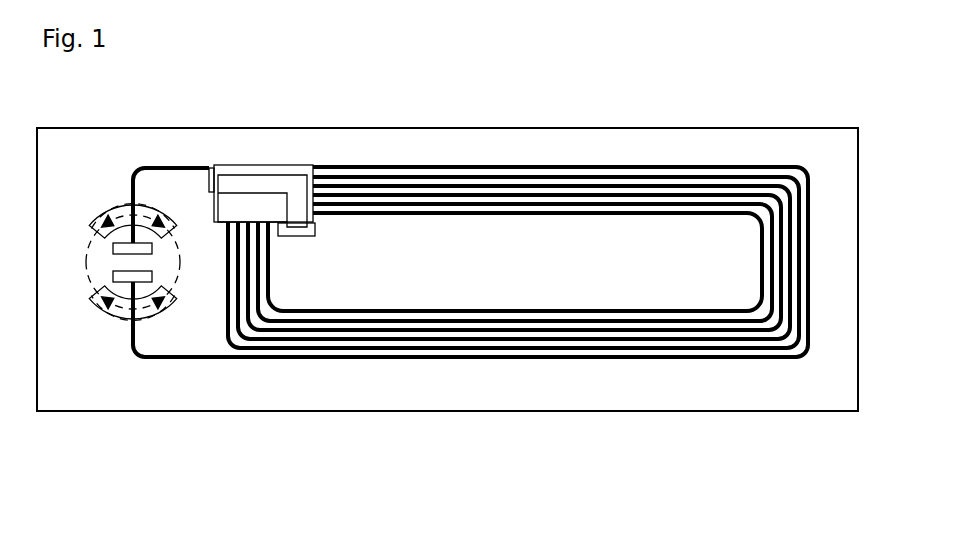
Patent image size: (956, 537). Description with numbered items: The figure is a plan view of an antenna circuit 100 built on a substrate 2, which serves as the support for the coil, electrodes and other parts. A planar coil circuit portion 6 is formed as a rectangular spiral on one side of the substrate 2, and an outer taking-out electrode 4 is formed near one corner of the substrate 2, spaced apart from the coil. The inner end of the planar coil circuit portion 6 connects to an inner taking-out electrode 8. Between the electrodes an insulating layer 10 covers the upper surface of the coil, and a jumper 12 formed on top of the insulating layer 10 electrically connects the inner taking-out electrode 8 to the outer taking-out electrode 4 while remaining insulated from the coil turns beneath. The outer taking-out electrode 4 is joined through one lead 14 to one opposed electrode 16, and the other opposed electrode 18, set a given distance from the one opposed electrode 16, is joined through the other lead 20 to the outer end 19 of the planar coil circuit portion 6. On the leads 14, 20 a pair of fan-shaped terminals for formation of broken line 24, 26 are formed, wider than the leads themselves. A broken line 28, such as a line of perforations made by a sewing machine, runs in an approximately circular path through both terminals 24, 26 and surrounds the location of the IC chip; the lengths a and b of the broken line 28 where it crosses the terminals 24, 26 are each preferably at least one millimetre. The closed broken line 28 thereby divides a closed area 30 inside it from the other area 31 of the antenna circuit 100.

The antenna circuit 100 is at (481, 103).
The substrate 2 is at (227, 385).
The other area 31 is at (88, 402).
The outer taking-out electrode 4 is at (212, 168).
The planar coil circuit portion 6 is at (665, 166).
The inner taking-out electrode 8 is at (310, 237).
The insulating layer 10 is at (282, 167).
The jumper 12 is at (253, 178).
The one lead 14 is at (148, 167).
The one opposed electrode 16 is at (113, 247).
The other opposed electrode 18 is at (113, 277).
The outer end 19 is at (300, 358).
The other lead 20 is at (148, 358).
The terminal for formation of broken line 24 is at (93, 225).
The terminal for formation of broken line 26 is at (108, 308).
The broken line 28 is at (181, 276).
The closed area 30 is at (180, 248).
The length of broken line a is at (147, 218).
The length of broken line b is at (130, 315).